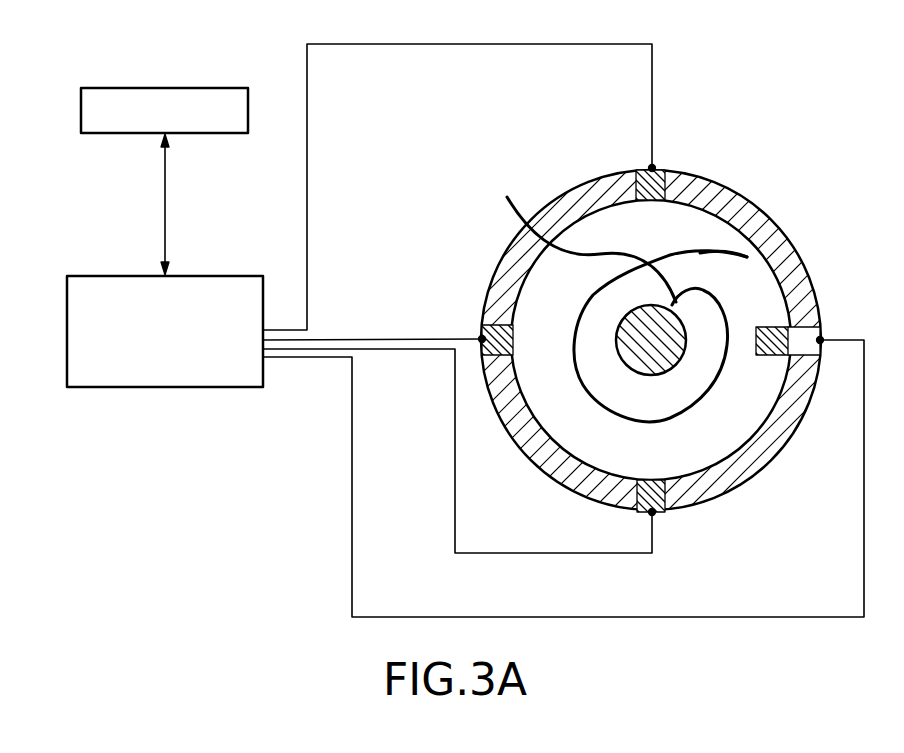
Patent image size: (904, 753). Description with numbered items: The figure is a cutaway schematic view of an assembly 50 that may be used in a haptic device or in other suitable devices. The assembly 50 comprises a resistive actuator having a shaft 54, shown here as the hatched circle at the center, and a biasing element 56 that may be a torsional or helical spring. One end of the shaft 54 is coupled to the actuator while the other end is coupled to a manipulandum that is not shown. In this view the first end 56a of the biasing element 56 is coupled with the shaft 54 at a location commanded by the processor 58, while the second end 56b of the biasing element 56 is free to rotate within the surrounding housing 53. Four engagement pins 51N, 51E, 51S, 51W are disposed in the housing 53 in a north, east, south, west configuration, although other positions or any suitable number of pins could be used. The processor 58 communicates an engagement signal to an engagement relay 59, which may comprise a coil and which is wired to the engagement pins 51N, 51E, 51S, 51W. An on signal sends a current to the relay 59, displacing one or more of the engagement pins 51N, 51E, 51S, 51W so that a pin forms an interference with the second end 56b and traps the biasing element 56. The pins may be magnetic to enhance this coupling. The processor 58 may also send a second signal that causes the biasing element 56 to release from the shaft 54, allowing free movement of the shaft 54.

The assembly 50 is at (572, 281).
The housing 53 is at (680, 158).
The engagement pin 51N is at (648, 167).
The engagement pin 51S is at (655, 497).
The engagement pin 51E is at (769, 326).
The engagement pin 51W is at (481, 338).
The shaft 54 is at (694, 385).
The biasing element 56 is at (589, 410).
The first end 56a is at (581, 234).
The second end 56b is at (720, 255).
The processor 58 is at (152, 88).
The engagement relay 59 is at (97, 276).